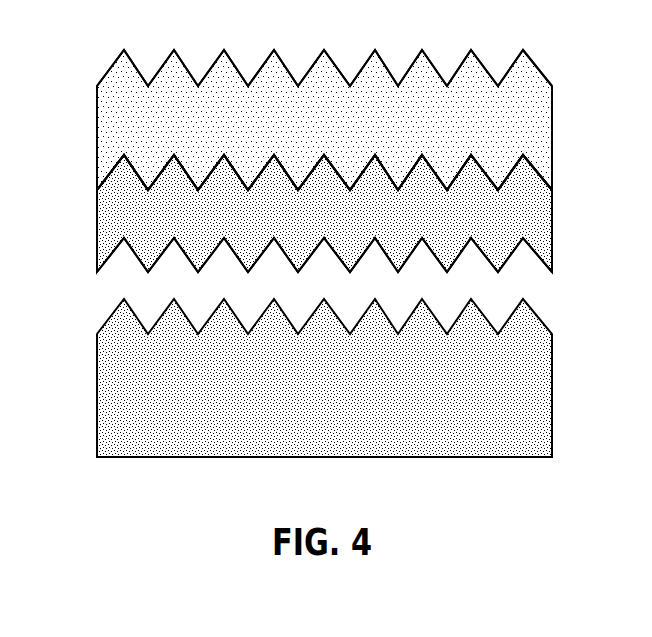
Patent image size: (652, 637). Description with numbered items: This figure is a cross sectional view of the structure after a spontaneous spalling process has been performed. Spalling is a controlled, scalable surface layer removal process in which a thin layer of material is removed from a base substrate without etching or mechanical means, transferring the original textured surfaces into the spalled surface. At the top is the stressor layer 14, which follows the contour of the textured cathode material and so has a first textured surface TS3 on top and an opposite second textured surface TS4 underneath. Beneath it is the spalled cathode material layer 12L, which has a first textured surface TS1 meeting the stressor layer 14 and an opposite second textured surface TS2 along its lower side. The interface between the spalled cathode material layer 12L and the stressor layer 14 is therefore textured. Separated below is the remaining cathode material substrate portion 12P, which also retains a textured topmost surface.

The stressor layer 14 is at (340, 136).
The spalled cathode material layer 12L is at (349, 229).
The cathode material substrate portion 12P is at (349, 403).
The first textured surface TS1 is at (542, 165).
The second textured surface TS2 is at (516, 262).
The first textured surface TS3 is at (104, 61).
The second textured surface TS4 is at (105, 166).